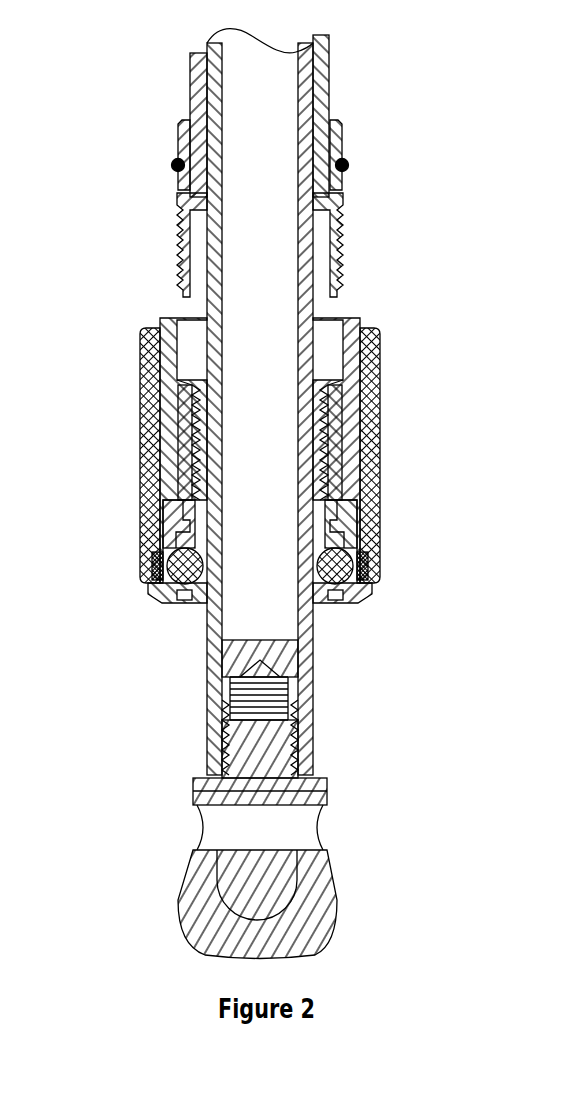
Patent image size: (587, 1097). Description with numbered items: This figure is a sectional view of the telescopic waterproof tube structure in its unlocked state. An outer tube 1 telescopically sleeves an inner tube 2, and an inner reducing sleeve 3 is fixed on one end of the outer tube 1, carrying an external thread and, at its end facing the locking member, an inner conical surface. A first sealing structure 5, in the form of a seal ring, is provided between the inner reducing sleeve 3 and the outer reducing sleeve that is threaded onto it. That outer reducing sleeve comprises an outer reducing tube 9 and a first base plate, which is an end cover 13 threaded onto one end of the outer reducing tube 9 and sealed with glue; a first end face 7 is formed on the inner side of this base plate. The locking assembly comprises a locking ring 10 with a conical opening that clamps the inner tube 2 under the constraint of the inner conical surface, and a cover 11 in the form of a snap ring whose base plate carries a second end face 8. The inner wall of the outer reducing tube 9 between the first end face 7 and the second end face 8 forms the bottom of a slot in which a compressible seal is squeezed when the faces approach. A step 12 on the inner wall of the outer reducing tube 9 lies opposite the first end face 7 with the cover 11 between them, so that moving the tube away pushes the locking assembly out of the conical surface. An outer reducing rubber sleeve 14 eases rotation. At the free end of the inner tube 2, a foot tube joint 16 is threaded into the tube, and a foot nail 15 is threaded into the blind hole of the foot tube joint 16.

The outer tube 1 is at (330, 75).
The inner tube 2 is at (328, 110).
The inner reducing sleeve 3 is at (342, 143).
The first sealing structure 5 is at (347, 172).
The first end face 7 is at (363, 595).
The second end face 8 is at (362, 553).
The outer reducing tube 9 is at (368, 322).
The locking ring 10 is at (373, 427).
The cover 11 is at (352, 522).
The step 12 is at (172, 498).
The end cover 13 is at (158, 597).
The outer reducing rubber sleeve 14 is at (375, 365).
The foot nail 15 is at (330, 907).
The foot tube joint 16 is at (290, 660).